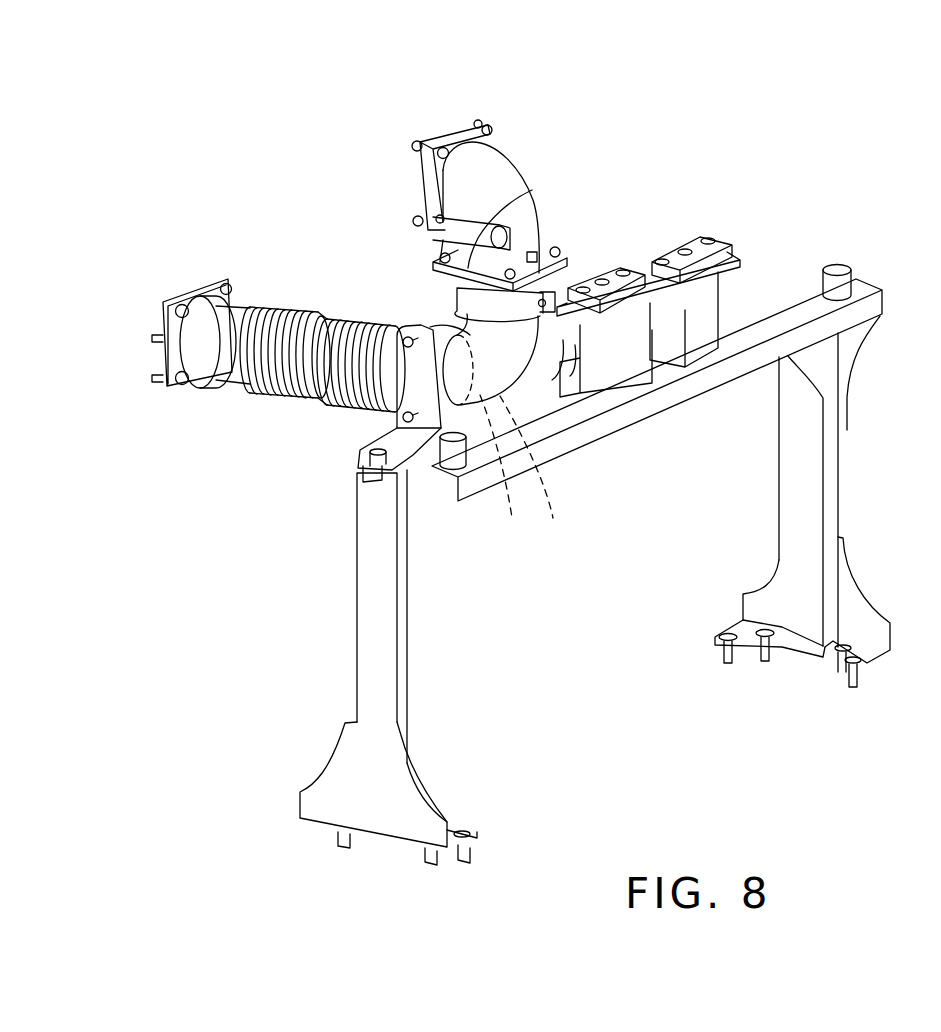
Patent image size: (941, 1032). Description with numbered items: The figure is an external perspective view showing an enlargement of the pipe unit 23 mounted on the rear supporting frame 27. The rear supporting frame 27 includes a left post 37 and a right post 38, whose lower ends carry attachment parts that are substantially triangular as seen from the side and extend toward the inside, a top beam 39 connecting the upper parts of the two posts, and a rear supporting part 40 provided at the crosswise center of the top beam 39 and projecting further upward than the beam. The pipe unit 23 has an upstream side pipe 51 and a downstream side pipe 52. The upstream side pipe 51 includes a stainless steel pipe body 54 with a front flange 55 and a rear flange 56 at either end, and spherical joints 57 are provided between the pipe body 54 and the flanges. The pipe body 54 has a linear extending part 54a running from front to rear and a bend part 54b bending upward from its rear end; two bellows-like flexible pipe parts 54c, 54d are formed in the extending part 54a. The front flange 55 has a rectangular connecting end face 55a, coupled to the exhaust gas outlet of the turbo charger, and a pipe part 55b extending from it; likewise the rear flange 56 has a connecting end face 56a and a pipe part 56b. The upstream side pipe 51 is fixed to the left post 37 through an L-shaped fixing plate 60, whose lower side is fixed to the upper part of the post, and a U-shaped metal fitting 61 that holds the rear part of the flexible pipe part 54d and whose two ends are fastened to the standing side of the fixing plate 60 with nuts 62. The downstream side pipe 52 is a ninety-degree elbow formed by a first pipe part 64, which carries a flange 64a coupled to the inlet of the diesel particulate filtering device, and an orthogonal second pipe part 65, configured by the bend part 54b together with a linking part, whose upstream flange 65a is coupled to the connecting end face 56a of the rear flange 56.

The pipe unit 23 is at (660, 178).
The rear supporting frame 27 is at (858, 250).
The left post 37 is at (355, 628).
The right post 38 is at (836, 473).
The top beam 39 is at (690, 387).
The rear supporting part 40 is at (745, 252).
The upstream side pipe 51 is at (265, 422).
The downstream side pipe 52 is at (530, 179).
The pipe body 54 is at (462, 337).
The extending part 54a is at (318, 315).
The bend part 54b is at (508, 362).
The flexible pipe part 54c is at (243, 380).
The flexible pipe part 54d is at (400, 414).
The front flange 55 is at (151, 294).
The connecting end face 55a is at (165, 342).
The pipe part 55b is at (197, 318).
The rear flange 56 is at (578, 268).
The connecting end face 56a is at (440, 252).
The pipe part 56b is at (452, 297).
The spherical joint 57 is at (240, 305).
The fixing plate 60 is at (535, 466).
The U-shaped metal fitting 61 is at (542, 505).
The nut 62 is at (404, 457).
The first pipe part 64 is at (476, 136).
The flange 64a is at (446, 145).
The second pipe part 65 is at (537, 237).
The flange 65a is at (532, 190).